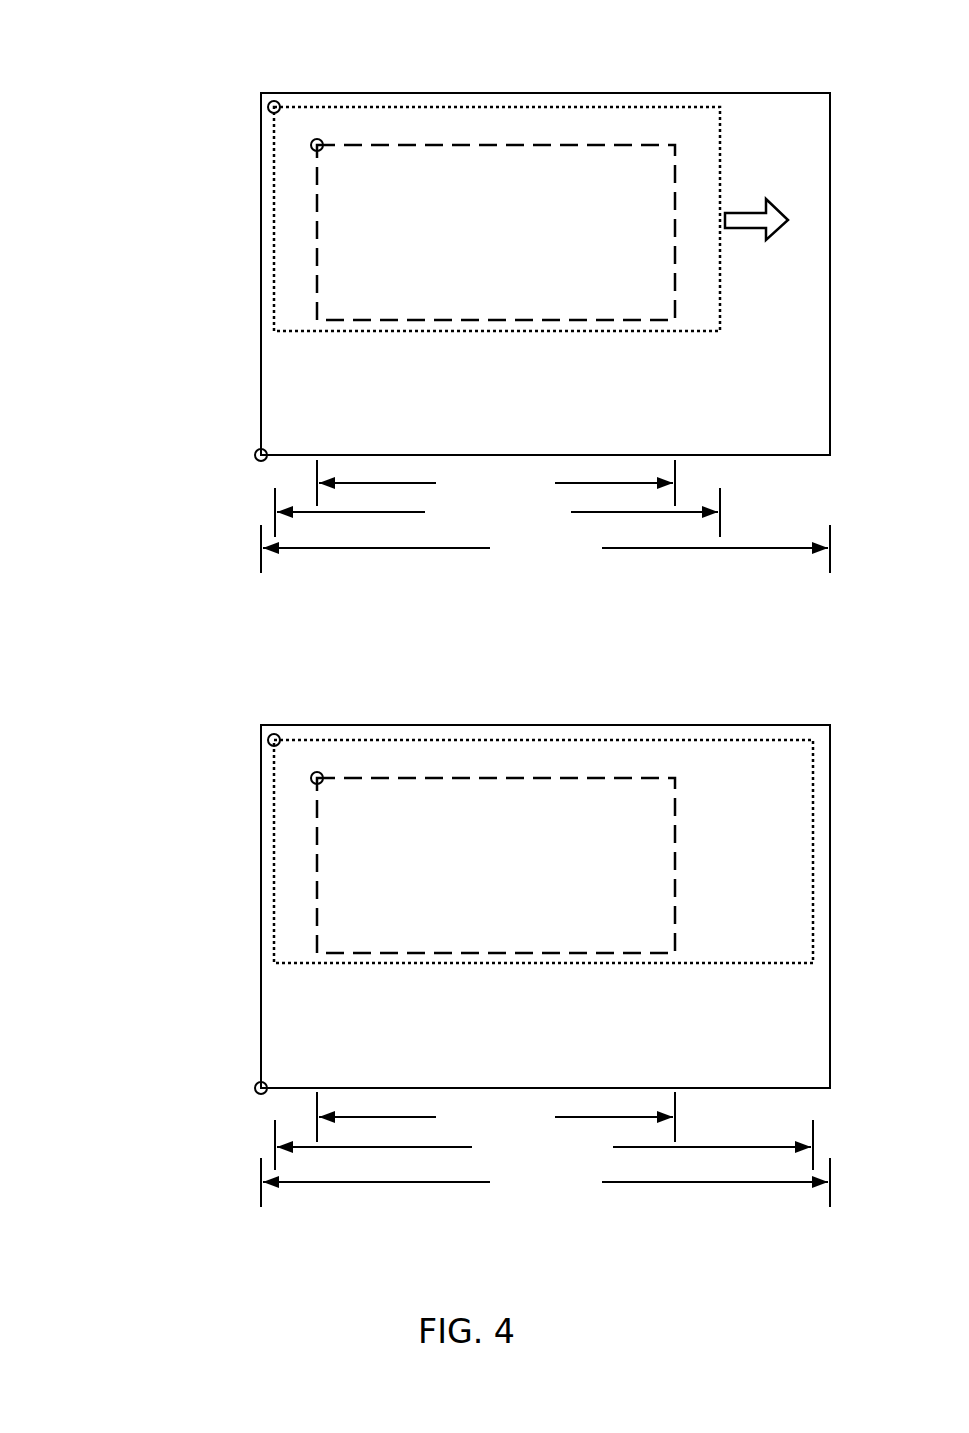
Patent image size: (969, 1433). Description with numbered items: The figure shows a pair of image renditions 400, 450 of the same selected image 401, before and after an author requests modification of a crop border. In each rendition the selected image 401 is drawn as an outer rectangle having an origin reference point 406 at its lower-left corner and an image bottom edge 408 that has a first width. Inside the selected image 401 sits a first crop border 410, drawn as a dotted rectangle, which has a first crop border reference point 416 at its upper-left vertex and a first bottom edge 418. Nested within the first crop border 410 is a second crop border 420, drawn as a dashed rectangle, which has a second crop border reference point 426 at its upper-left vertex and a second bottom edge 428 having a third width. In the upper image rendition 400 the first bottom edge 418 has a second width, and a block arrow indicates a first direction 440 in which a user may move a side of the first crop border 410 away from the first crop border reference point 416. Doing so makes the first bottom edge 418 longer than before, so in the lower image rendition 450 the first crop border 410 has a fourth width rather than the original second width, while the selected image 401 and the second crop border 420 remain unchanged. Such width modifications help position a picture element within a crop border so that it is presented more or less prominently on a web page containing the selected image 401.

The image rendition 400 is at (136, 128).
The image rendition 450 is at (120, 768).
The selected image 401 is at (325, 431).
The origin reference point 406 is at (257, 469).
The image bottom edge 408 is at (759, 449).
The first crop border 410 is at (515, 134).
The first crop border reference point 416 is at (274, 86).
The first bottom edge 418 is at (524, 337).
The second crop border 420 is at (515, 243).
The second crop border reference point 426 is at (314, 130).
The second bottom edge 428 is at (638, 314).
The first direction 440 is at (751, 185).